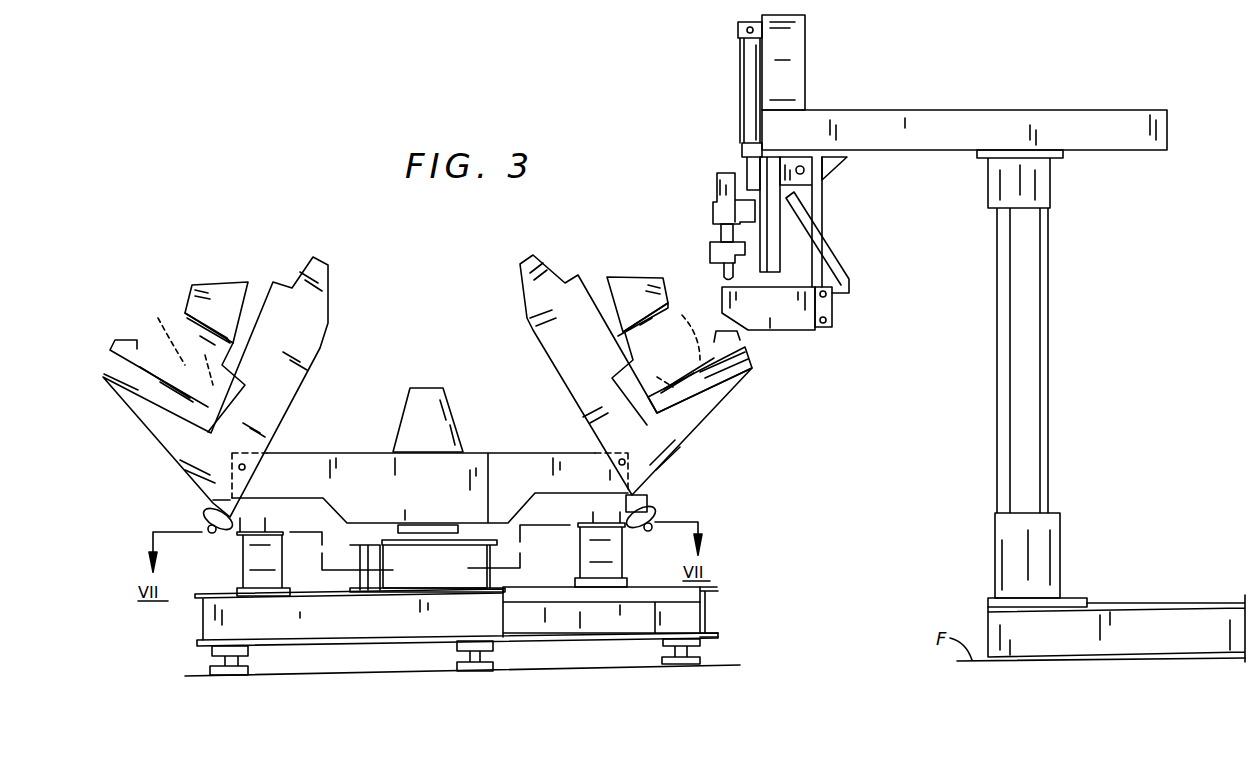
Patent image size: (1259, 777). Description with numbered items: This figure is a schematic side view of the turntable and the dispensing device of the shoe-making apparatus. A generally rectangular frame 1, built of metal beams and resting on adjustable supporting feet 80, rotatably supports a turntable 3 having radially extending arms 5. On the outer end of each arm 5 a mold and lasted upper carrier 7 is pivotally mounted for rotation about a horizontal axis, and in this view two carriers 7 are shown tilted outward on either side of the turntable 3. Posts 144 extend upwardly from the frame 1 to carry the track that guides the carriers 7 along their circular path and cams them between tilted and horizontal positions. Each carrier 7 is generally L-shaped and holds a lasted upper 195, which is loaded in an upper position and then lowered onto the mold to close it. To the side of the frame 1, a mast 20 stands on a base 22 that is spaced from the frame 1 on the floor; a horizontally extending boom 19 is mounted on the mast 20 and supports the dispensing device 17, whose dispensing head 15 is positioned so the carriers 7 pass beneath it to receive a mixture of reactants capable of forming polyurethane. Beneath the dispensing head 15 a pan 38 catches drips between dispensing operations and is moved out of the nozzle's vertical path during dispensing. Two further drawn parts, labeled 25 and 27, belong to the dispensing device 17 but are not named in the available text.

The frame 1 is at (367, 632).
The turntable 3 is at (381, 433).
The arm 5 is at (321, 456).
The mold and lasted upper carrier 7 is at (316, 340).
The dispensing head 15 is at (722, 275).
The dispensing device 17 is at (702, 213).
The boom 19 is at (856, 116).
The mast 20 is at (1006, 312).
The base 22 is at (1114, 610).
The cylinder 25 is at (741, 84).
The housing 27 is at (797, 58).
The pan 38 is at (806, 330).
The adjustable supporting feet 80 is at (248, 666).
The post 144 is at (243, 561).
The lasted upper 195 is at (160, 335).